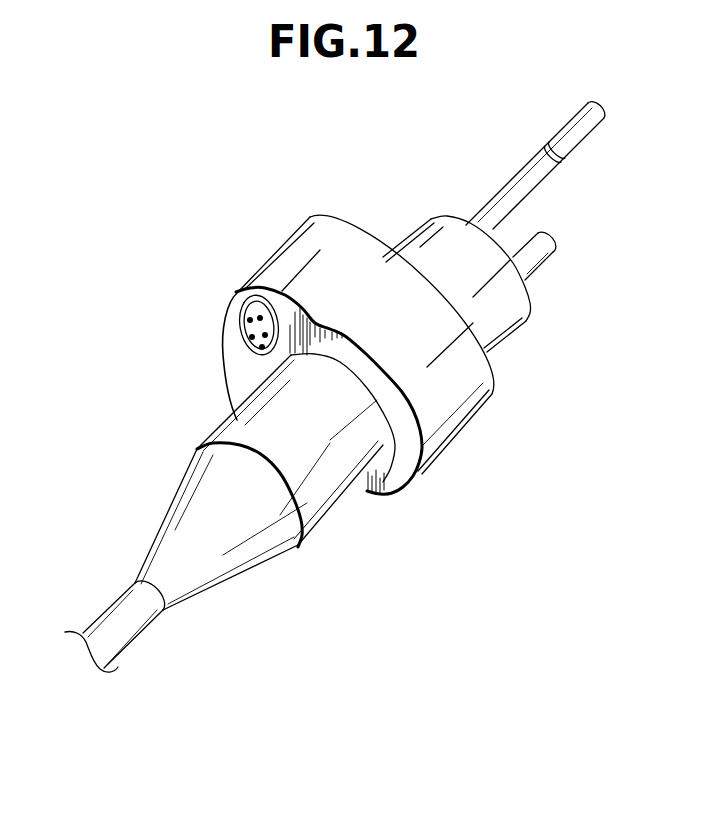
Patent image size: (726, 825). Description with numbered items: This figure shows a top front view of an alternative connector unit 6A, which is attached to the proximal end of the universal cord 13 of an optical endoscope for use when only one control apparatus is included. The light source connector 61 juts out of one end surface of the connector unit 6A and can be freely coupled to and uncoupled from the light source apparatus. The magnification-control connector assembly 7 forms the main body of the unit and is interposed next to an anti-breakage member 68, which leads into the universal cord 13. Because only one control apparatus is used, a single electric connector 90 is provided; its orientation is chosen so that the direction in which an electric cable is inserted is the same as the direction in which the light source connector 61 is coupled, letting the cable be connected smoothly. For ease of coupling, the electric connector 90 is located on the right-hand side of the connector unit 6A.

The connector unit 6A is at (135, 224).
The magnification-control connector assembly 7 is at (302, 243).
The light source connector 61 is at (497, 189).
The electric connector 90 is at (222, 348).
The anti-breakage member 68 is at (178, 512).
The universal cord 13 is at (113, 621).